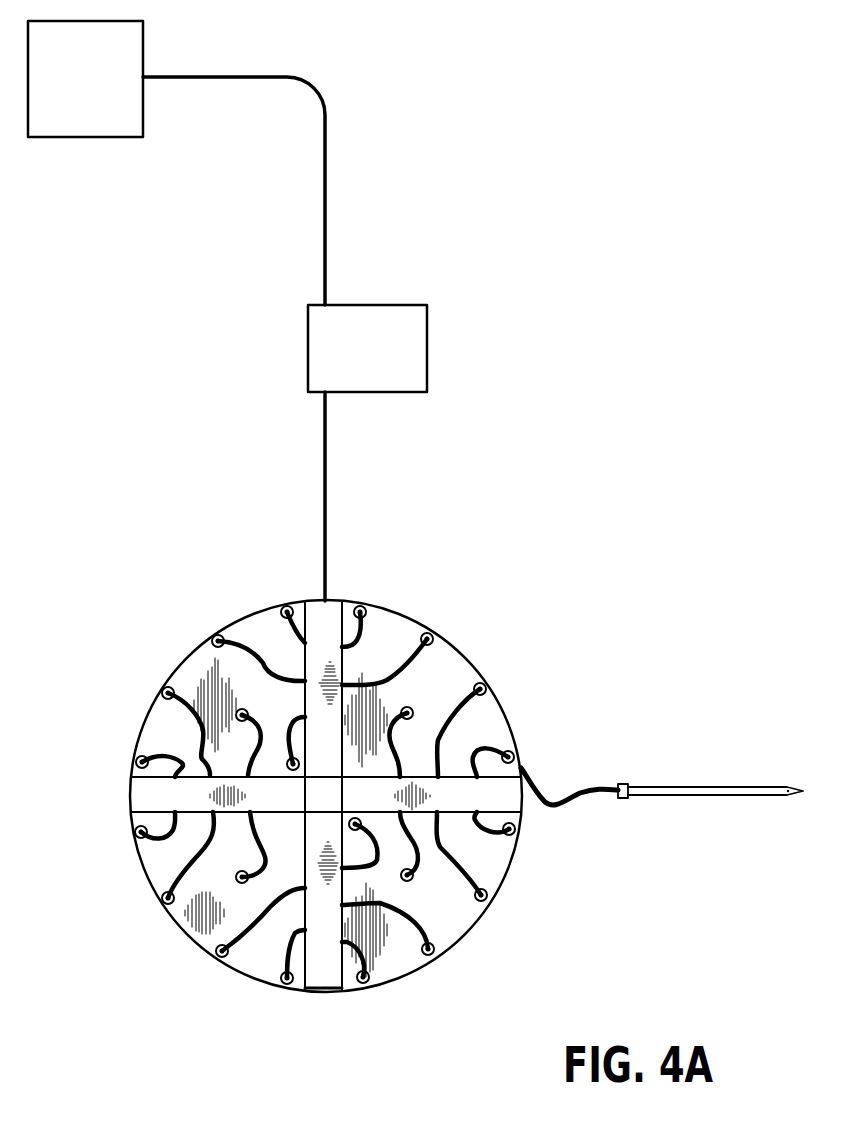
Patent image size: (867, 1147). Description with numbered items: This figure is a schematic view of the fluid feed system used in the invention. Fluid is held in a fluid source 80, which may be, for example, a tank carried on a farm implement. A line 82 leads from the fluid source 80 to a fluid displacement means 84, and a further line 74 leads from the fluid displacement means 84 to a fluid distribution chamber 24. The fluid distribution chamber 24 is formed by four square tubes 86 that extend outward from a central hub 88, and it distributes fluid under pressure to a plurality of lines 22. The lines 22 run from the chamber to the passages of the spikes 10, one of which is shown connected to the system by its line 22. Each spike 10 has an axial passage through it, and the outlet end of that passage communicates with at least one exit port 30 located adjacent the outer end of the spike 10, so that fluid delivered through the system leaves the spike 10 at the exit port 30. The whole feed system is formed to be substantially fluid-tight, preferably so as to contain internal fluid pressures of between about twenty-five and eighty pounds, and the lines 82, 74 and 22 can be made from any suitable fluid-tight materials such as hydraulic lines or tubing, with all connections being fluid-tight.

The spike 10 is at (708, 787).
The lines 22 is at (200, 712).
The fluid distribution chamber 24 is at (346, 664).
The exit port 30 is at (787, 794).
The line 74 is at (326, 457).
The fluid source 80 is at (101, 97).
The line 82 is at (326, 160).
The fluid displacement means 84 is at (350, 366).
The tubes 86 is at (313, 601).
The central hub 88 is at (320, 796).